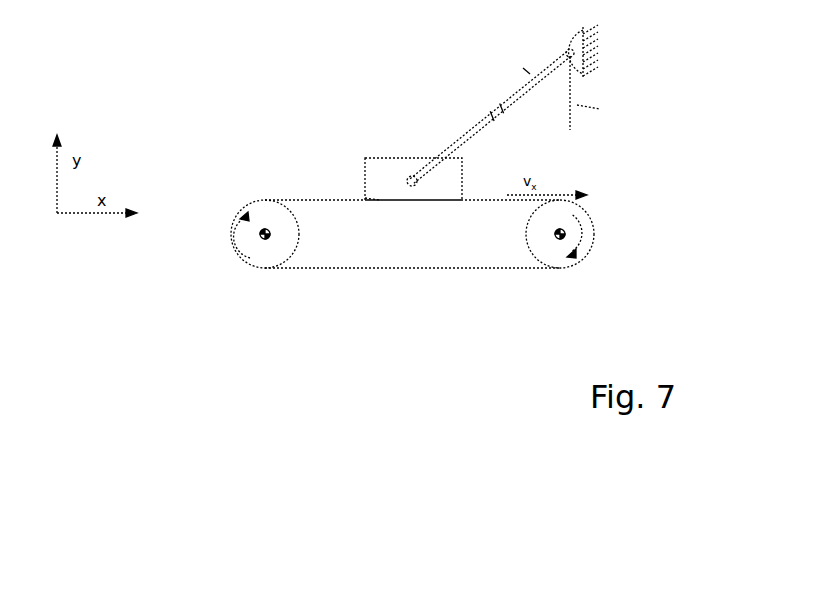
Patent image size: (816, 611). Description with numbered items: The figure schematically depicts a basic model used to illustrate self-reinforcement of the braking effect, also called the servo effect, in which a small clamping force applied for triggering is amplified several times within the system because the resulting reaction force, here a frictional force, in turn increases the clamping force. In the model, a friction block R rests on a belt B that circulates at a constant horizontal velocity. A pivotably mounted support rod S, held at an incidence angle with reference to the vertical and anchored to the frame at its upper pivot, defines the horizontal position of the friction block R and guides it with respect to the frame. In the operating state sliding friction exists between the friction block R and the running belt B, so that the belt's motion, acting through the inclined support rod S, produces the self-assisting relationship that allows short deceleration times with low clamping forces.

The belt B is at (254, 190).
The friction block R is at (390, 151).
The support rod S is at (443, 133).